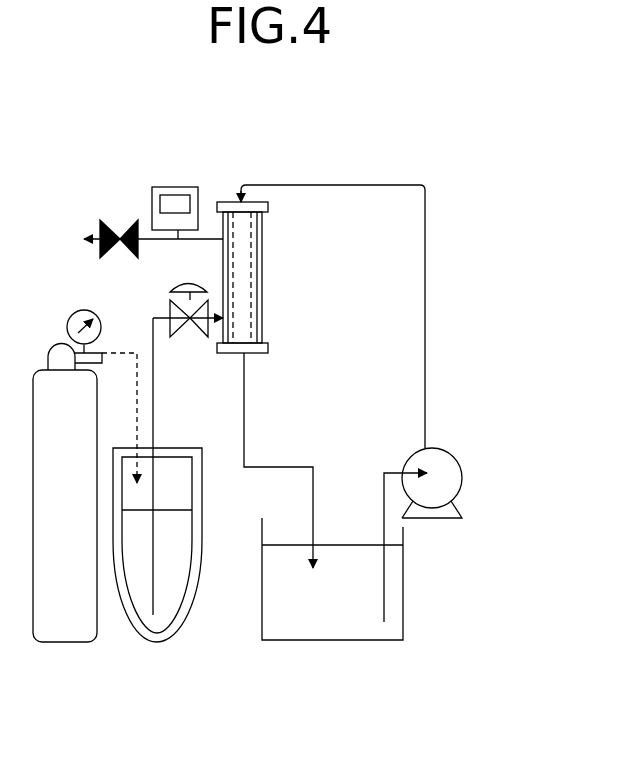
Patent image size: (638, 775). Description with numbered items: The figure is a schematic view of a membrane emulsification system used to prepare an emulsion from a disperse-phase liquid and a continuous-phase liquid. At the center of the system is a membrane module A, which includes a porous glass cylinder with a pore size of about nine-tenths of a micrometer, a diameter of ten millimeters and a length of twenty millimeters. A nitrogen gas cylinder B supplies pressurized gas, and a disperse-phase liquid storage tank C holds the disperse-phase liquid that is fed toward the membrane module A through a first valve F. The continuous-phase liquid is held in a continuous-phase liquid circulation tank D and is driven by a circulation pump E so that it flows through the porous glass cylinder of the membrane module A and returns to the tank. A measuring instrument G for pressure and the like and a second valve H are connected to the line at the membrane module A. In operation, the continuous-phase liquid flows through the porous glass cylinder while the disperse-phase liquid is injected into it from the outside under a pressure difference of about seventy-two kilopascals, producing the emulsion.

The membrane module A is at (260, 277).
The nitrogen gas cylinder B is at (67, 476).
The disperse-phase liquid storage tank C is at (157, 545).
The continuous-phase liquid circulation tank D is at (332, 579).
The circulation pump E is at (423, 466).
The first valve F is at (181, 302).
The measuring instrument G is at (175, 192).
The second valve H is at (152, 223).